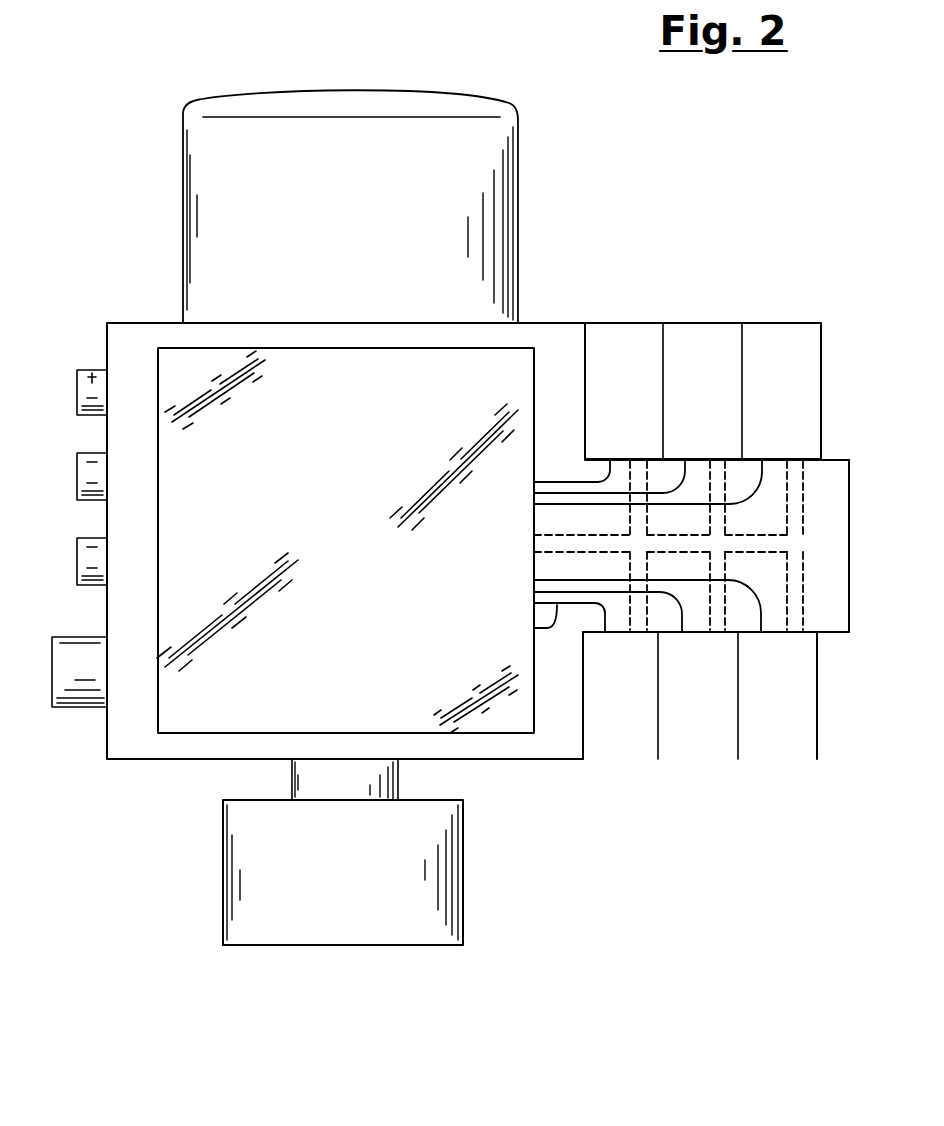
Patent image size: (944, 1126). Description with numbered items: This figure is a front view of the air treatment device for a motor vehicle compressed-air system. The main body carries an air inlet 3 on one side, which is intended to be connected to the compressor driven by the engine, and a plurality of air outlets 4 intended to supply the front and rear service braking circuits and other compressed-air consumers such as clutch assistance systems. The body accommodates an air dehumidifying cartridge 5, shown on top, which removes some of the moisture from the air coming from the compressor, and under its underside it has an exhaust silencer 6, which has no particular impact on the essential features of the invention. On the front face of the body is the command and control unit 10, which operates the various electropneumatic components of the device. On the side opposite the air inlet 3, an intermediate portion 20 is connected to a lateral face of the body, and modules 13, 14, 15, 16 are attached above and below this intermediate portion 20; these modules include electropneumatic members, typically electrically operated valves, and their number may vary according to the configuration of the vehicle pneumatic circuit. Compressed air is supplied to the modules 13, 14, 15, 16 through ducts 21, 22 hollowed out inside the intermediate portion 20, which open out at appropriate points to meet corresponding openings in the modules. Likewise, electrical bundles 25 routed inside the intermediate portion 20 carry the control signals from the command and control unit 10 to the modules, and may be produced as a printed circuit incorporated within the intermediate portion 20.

The air inlet 3 is at (62, 678).
The air outlets 4 is at (92, 372).
The air dehumidifying cartridge 5 is at (328, 145).
The exhaust silencer 6 is at (298, 917).
The command and control unit 10 is at (345, 540).
The module 13 is at (628, 742).
The module 14 is at (697, 735).
The module 15 is at (777, 732).
The module 16 is at (617, 343).
The intermediate portion 20 is at (840, 462).
The duct 21 is at (803, 592).
The duct 22 is at (673, 547).
The electrical bundles 25 is at (548, 627).